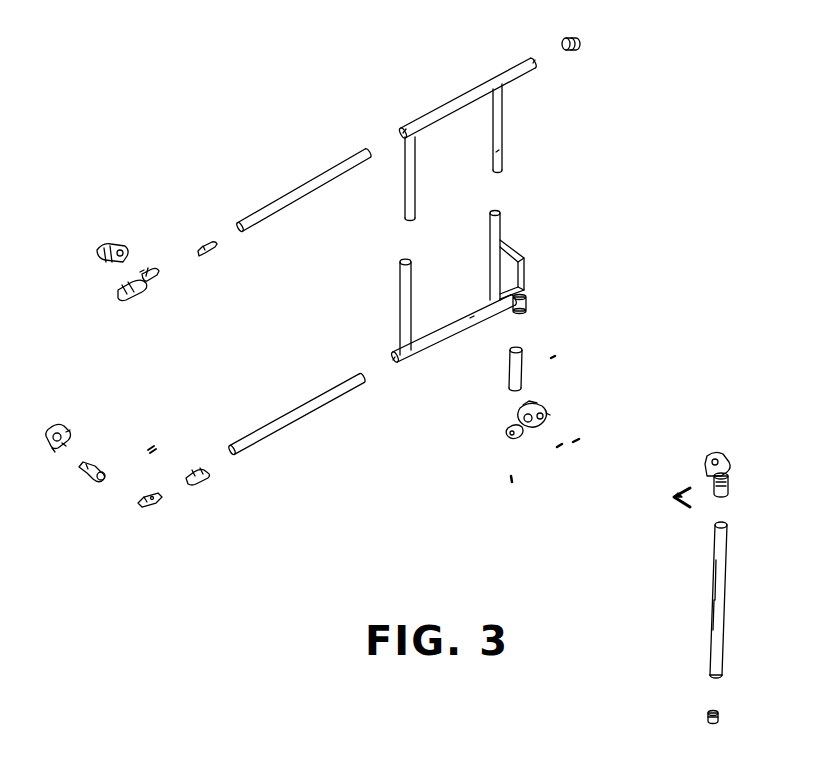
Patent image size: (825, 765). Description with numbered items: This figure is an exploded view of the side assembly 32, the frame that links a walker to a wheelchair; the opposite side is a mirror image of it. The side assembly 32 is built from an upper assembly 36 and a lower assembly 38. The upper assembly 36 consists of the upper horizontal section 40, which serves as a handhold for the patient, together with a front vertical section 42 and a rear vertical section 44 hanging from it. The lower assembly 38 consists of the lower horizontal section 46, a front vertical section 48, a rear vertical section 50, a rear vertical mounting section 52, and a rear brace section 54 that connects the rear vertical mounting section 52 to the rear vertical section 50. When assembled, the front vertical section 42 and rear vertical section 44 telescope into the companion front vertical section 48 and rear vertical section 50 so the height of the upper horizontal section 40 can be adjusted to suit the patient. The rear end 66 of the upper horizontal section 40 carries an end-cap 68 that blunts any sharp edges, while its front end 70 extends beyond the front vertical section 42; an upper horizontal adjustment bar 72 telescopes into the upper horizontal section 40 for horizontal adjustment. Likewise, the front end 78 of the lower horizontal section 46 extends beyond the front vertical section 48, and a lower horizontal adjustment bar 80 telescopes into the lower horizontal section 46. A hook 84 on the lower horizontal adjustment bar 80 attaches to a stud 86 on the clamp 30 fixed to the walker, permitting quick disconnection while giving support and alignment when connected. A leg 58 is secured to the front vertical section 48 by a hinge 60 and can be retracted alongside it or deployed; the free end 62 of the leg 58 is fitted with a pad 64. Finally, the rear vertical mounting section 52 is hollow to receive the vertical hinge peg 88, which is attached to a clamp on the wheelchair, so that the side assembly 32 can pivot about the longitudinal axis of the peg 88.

The clamp 30 is at (70, 442).
The side assembly 32 is at (546, 412).
The upper assembly 36 is at (476, 82).
The lower assembly 38 is at (448, 338).
The upper horizontal section 40 is at (512, 77).
The front vertical section 42 is at (406, 180).
The rear vertical section 44 is at (500, 150).
The lower horizontal section 46 is at (470, 314).
The front vertical section 48 is at (400, 302).
The rear vertical section 50 is at (500, 230).
The rear vertical mounting section 52 is at (529, 302).
The rear brace section 54 is at (530, 258).
The leg 58 is at (728, 590).
The hinge 60 is at (722, 455).
The free end 62 is at (709, 675).
The pad 64 is at (720, 712).
The rear end 66 is at (538, 62).
The end-cap 68 is at (583, 43).
The front end 70 is at (406, 126).
The upper horizontal adjustment bar 72 is at (298, 184).
The front end 78 is at (403, 365).
The lower horizontal adjustment bar 80 is at (270, 434).
The hook 84 is at (153, 508).
The stud 86 is at (100, 470).
The vertical hinge peg 88 is at (522, 347).